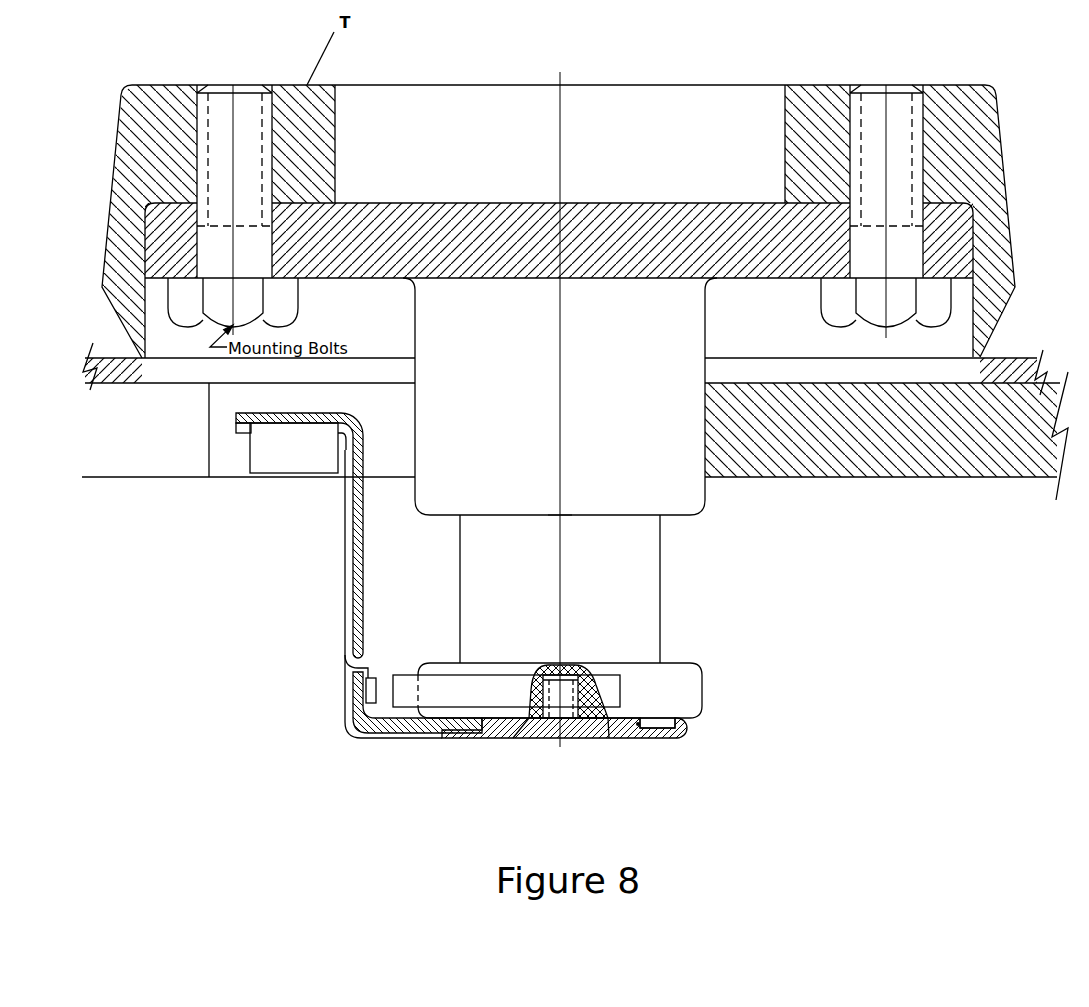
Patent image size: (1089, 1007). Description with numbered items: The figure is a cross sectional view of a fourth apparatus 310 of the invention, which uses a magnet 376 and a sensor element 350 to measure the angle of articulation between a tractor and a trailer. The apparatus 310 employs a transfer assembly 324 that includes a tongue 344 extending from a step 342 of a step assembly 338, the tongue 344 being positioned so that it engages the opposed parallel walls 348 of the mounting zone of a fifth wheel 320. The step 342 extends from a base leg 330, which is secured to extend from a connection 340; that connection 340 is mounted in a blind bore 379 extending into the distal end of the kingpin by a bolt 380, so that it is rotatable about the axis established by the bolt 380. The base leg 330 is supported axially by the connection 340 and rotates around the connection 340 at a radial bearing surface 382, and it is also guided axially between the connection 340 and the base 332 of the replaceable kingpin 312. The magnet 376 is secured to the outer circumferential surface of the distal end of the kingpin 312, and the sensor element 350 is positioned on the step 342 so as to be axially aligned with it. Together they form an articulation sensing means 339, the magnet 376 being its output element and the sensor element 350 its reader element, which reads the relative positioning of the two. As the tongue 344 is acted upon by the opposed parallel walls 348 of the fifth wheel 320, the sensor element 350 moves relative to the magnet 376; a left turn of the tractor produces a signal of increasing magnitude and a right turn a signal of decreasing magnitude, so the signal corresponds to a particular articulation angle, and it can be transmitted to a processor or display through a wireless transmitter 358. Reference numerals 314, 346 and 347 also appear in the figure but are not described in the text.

The apparatus 310 is at (182, 62).
The replaceable kingpin 312 is at (714, 528).
The mounting flange 314 is at (853, 373).
The fifth wheel 320 is at (920, 477).
The transfer assembly 324 is at (257, 548).
The base leg 330 is at (410, 725).
The base 332 is at (662, 718).
The step assembly 338 is at (330, 742).
The articulation sensing means 339 is at (386, 654).
The connection 340 is at (657, 738).
The step 342 is at (363, 592).
The tongue 344 is at (245, 430).
The support 346 is at (132, 551).
The cavity 347 is at (148, 433).
The opposed parallel walls 348 is at (220, 425).
The sensor element 350 is at (365, 690).
The wireless transmitter 358 is at (293, 473).
The magnet 376 is at (410, 685).
The blind bore 379 is at (582, 682).
The bolt 380 is at (570, 733).
The radial bearing surface 382 is at (638, 725).